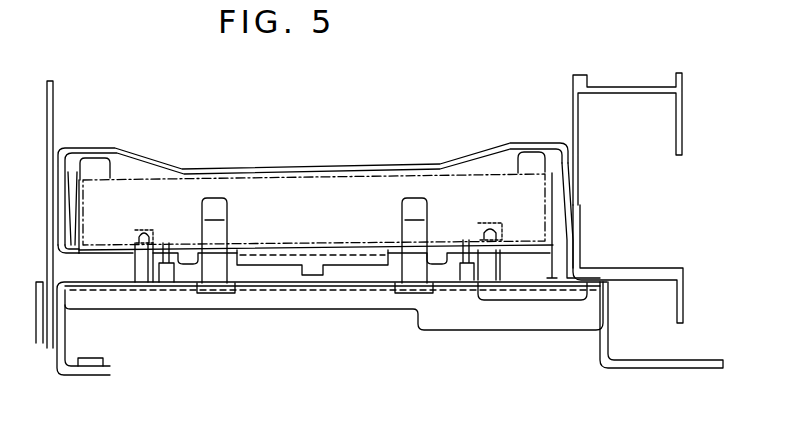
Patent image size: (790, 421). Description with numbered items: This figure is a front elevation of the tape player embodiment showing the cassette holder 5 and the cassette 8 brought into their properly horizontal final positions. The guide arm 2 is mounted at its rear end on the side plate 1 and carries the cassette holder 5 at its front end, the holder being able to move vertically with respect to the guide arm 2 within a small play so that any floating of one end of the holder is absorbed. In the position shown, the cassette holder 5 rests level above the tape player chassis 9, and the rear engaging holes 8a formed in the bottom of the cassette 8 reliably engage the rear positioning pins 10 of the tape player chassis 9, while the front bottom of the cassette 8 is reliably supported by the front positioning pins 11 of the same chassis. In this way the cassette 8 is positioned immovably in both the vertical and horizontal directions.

The side plate 1 is at (54, 118).
The guide arm 2 is at (465, 166).
The cassette holder 5 is at (343, 258).
The cassette 8 is at (143, 180).
The rear engaging holes 8a is at (137, 230).
The tape player chassis 9 is at (483, 316).
The rear positioning pins 10 is at (140, 266).
The front positioning pins 11 is at (172, 270).